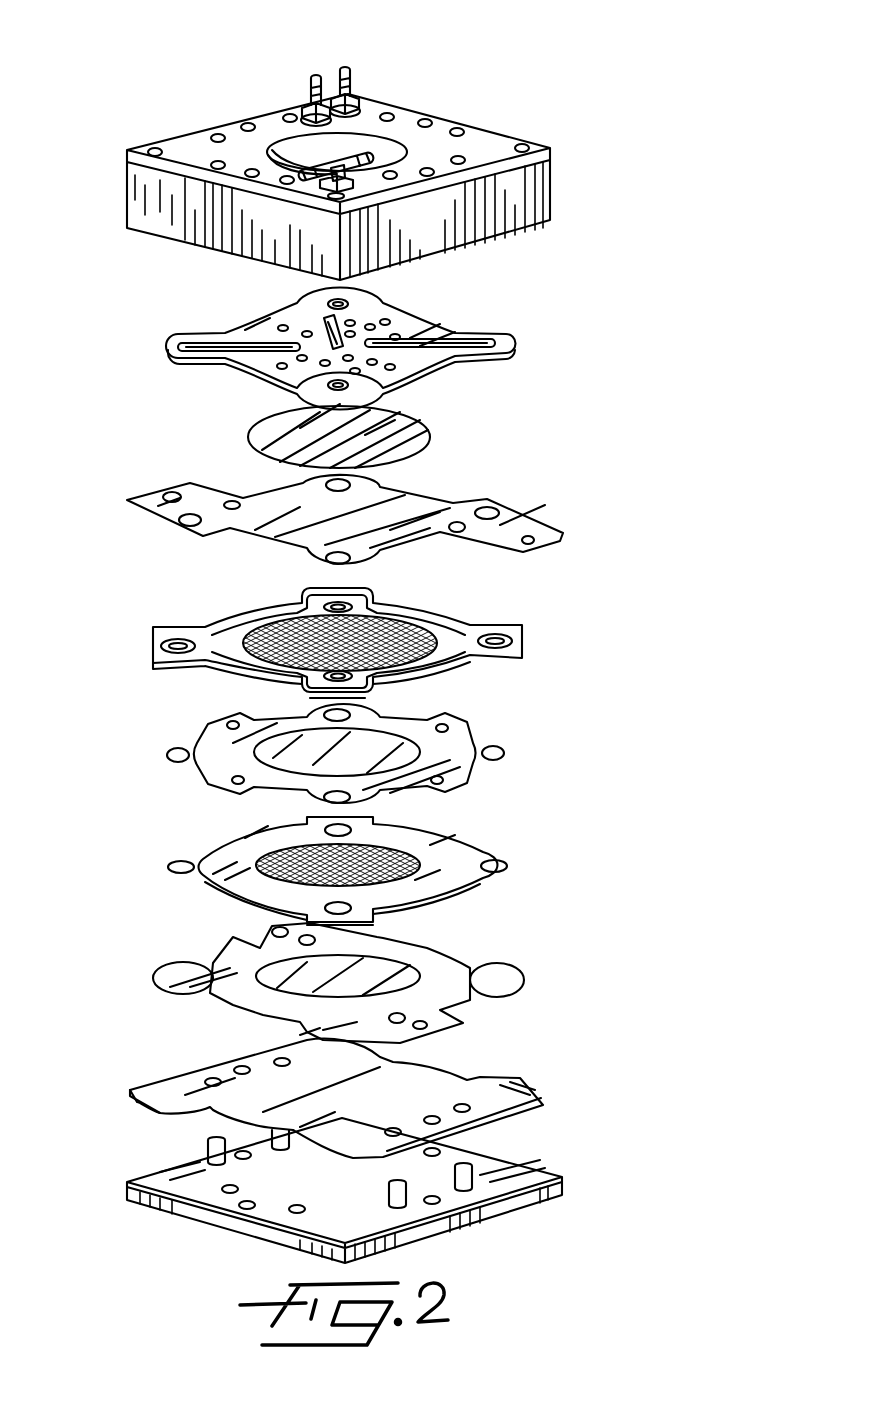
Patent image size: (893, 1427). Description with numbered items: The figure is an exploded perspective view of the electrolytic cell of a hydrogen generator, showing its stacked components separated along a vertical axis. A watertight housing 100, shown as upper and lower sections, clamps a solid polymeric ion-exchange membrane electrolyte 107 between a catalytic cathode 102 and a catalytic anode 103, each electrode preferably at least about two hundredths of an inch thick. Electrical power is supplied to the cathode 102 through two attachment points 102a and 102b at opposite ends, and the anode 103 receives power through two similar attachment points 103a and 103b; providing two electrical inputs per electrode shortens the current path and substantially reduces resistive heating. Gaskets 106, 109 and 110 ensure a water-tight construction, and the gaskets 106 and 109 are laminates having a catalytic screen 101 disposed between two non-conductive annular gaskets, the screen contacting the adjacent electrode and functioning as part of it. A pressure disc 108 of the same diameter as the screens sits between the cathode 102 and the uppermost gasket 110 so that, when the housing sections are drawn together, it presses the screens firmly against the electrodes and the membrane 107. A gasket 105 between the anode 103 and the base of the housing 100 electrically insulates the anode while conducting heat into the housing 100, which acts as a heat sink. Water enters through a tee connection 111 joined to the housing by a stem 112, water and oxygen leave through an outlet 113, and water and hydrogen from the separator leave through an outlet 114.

The watertight housing 100 is at (148, 197).
The catalytic screen 101 is at (400, 632).
The catalytic cathode 102 is at (327, 515).
The attachment point 102a is at (172, 498).
The attachment point 102b is at (532, 540).
The catalytic anode 103 is at (330, 979).
The attachment point 103a is at (273, 925).
The attachment point 103b is at (423, 1018).
The gasket 105 is at (175, 1098).
The gasket 106 is at (240, 858).
The solid polymeric ion-exchange membrane electrolyte 107 is at (430, 726).
The pressure disc 108 is at (247, 436).
The gasket 109 is at (306, 639).
The gasket 110 is at (165, 349).
The tee connection 111 is at (303, 175).
The stem 112 is at (356, 181).
The outlet 113 is at (350, 90).
The outlet 114 is at (303, 93).